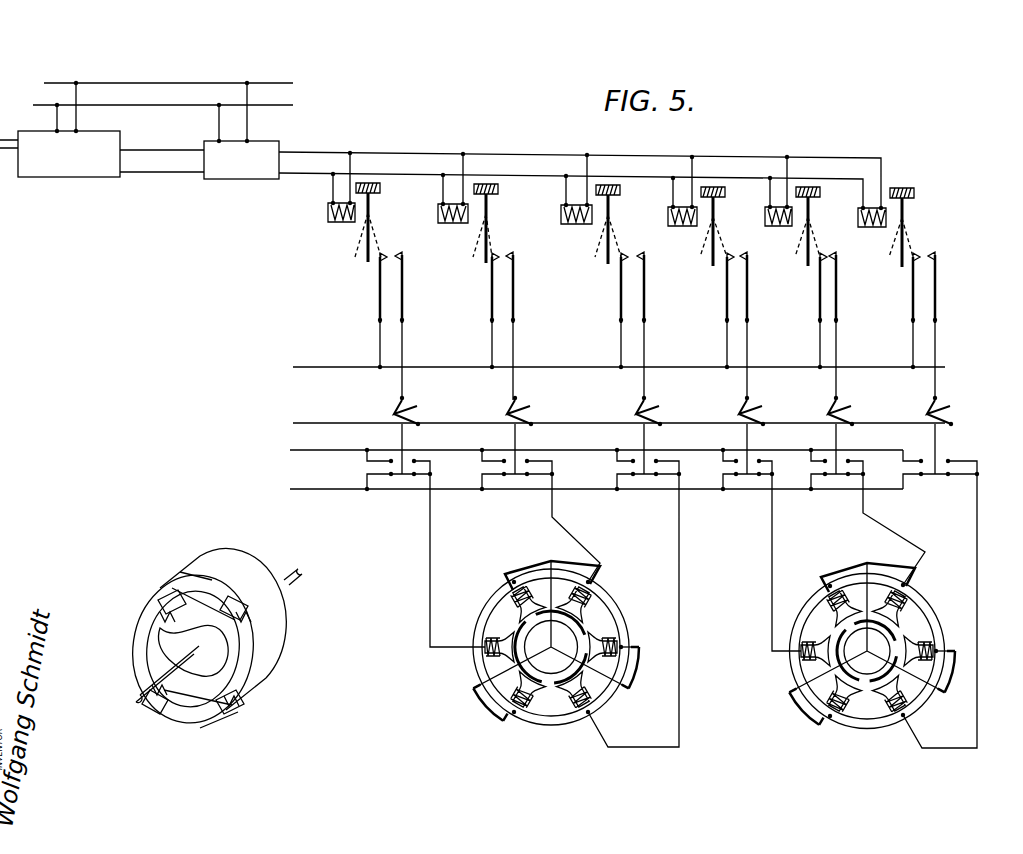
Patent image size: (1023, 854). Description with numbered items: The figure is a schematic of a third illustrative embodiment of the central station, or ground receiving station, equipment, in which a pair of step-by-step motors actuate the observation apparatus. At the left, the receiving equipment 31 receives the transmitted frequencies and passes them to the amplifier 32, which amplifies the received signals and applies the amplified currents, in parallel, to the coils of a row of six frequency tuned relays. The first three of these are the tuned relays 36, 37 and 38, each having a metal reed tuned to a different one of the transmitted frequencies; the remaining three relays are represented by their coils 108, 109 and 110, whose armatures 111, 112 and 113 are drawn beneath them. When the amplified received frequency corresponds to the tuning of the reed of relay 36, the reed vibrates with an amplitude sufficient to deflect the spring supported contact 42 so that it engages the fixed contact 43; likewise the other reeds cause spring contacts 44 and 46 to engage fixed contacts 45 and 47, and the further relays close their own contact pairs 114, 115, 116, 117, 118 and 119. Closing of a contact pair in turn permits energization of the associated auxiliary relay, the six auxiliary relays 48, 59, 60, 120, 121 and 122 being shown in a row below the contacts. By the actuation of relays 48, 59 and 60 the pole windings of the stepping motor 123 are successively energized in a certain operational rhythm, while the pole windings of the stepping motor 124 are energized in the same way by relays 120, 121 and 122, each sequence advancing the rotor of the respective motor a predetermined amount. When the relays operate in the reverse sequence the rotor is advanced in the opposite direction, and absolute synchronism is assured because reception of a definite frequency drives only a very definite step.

The receiving equipment 31 is at (70, 168).
The amplifier 32 is at (243, 170).
The tuned relay 36 is at (360, 216).
The tuned relay 37 is at (478, 219).
The tuned relay 38 is at (600, 224).
The coil 108 is at (668, 226).
The coil 109 is at (765, 226).
The coil 110 is at (858, 226).
The relay armature 111 is at (702, 214).
The relay armature 112 is at (800, 220).
The relay armature 113 is at (895, 220).
The spring supported contact 42 is at (380, 283).
The fixed contact 43 is at (404, 300).
The spring contact 44 is at (492, 283).
The fixed contact 45 is at (515, 300).
The spring contact 46 is at (621, 298).
The fixed contact 47 is at (646, 300).
The relay contact 114 is at (727, 292).
The relay contact 115 is at (749, 290).
The relay contact 116 is at (820, 303).
The relay contact 117 is at (838, 290).
The relay contact 118 is at (913, 310).
The relay contact 119 is at (937, 295).
The auxiliary relay 48 is at (412, 402).
The auxiliary relay 59 is at (527, 403).
The auxiliary relay 60 is at (656, 403).
The auxiliary relay 120 is at (768, 406).
The auxiliary relay 121 is at (847, 407).
The auxiliary relay 122 is at (950, 410).
The stepping motor 123 is at (553, 720).
The stepping motor 124 is at (862, 720).